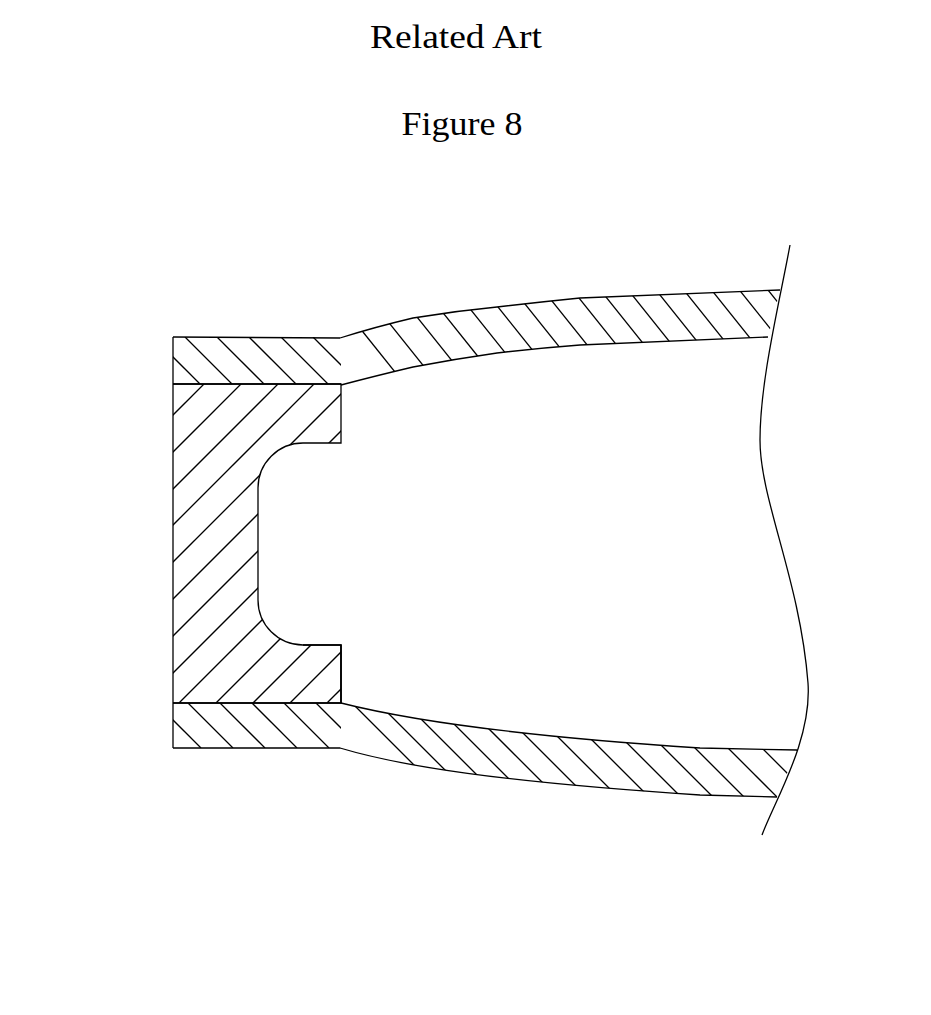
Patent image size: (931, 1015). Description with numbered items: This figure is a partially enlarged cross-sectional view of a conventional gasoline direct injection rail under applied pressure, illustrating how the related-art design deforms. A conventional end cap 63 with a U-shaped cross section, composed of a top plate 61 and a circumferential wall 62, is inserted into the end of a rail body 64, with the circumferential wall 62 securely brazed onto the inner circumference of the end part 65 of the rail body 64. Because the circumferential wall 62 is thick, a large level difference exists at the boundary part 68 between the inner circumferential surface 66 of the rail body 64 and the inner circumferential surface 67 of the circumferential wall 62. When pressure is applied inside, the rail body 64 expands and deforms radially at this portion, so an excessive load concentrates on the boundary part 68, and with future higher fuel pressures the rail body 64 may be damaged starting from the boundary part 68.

The top plate 61 is at (172, 500).
The circumferential wall 62 is at (280, 383).
The end cap 63 is at (433, 555).
The rail body 64 is at (577, 295).
The end part 65 is at (202, 337).
The inner circumferential surface of the rail body 66 is at (518, 735).
The inner circumferential surface of the circumferential wall 67 is at (320, 645).
The boundary part 68 is at (343, 700).